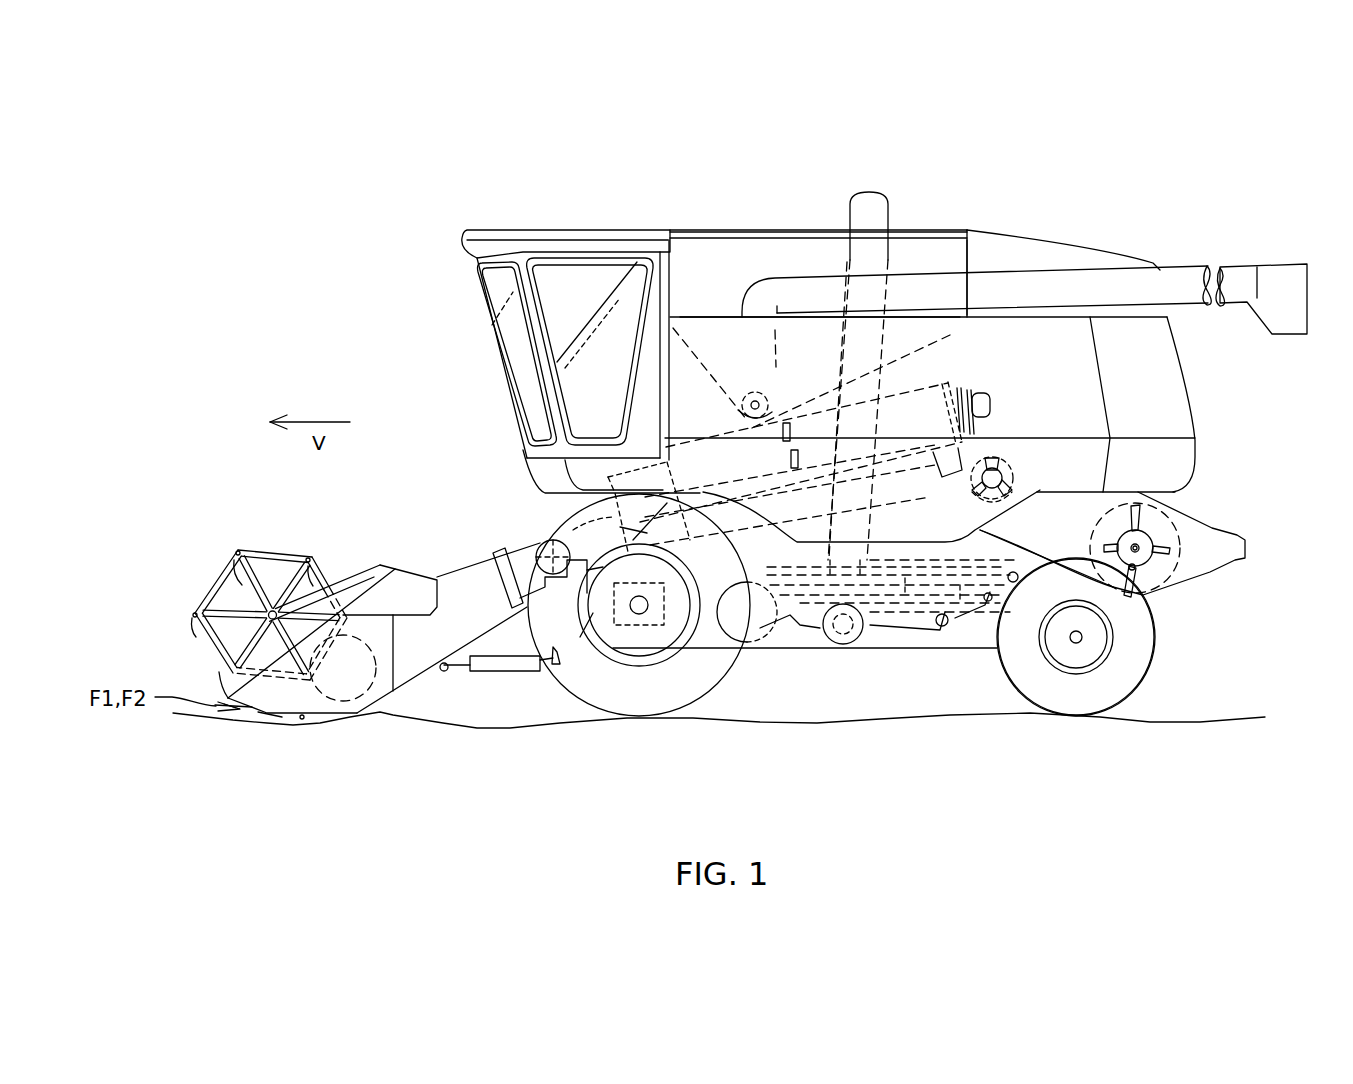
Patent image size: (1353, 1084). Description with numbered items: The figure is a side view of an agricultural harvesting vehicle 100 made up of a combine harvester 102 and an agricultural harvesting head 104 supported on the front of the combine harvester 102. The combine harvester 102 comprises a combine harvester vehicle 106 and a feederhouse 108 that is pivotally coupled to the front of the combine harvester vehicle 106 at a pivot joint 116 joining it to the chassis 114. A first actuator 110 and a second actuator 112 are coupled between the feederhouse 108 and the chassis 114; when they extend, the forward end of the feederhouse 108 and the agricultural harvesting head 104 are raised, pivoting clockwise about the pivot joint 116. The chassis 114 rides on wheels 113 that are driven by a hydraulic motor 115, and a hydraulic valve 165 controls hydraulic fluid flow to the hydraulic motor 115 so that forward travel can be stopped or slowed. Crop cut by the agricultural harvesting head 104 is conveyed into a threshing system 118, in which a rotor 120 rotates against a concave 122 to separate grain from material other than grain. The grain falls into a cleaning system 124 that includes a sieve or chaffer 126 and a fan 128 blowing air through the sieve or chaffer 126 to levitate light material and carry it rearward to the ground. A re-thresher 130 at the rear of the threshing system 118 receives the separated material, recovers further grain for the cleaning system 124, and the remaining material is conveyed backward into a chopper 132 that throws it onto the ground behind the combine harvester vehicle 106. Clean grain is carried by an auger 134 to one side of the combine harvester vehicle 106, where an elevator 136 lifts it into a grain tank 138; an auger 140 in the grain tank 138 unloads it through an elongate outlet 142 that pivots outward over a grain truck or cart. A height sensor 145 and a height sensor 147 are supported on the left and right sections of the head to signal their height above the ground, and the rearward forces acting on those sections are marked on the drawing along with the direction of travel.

The agricultural harvesting vehicle 100 is at (821, 157).
The combine harvester 102 is at (912, 230).
The agricultural harvesting head 104 is at (325, 717).
The combine harvester vehicle 106 is at (708, 230).
The feederhouse 108 is at (437, 568).
The first actuator 110 is at (496, 714).
The second actuator 112 is at (516, 672).
The wheels 113 is at (592, 716).
The chassis 114 is at (807, 650).
The hydraulic motor 115 is at (653, 627).
The pivot joint 116 is at (552, 556).
The threshing system 118 is at (918, 386).
The rotor 120 is at (948, 382).
The concave 122 is at (885, 503).
The cleaning system 124 is at (977, 660).
The sieve or chaffer 126 is at (926, 628).
The fan 128 is at (753, 650).
The re-thresher 130 is at (1010, 470).
The chopper 132 is at (1187, 583).
The auger 134 is at (850, 660).
The elevator 136 is at (840, 300).
The grain tank 138 is at (757, 230).
The auger 140 is at (752, 392).
The elongate outlet 142 is at (1033, 262).
The height sensor 145 is at (232, 737).
The height sensor 147 is at (280, 722).
The hydraulic valve 165 is at (666, 627).